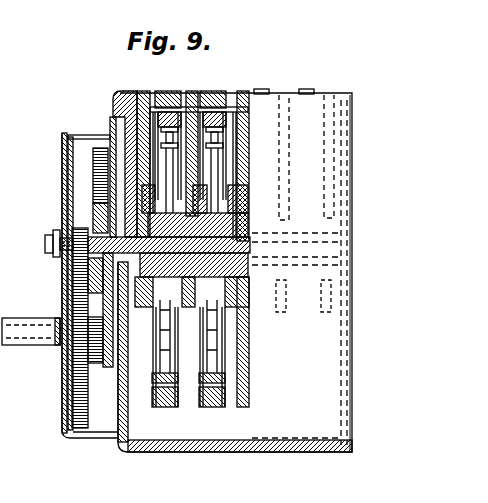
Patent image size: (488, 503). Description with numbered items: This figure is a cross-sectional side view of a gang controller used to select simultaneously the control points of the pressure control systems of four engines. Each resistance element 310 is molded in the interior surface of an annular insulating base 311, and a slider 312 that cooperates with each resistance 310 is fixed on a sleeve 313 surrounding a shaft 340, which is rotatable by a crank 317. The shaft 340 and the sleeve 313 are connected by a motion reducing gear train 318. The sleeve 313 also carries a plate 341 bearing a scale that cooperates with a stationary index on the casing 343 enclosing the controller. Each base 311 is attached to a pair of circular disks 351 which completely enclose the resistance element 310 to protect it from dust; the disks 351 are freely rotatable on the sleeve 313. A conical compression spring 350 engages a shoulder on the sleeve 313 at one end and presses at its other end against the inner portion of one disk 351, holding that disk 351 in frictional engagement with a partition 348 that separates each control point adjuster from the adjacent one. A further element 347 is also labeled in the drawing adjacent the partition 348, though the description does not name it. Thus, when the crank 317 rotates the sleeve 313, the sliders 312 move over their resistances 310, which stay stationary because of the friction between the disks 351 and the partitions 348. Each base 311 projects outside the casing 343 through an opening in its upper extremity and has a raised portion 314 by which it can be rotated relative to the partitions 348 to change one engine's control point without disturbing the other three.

The resistance element 310 is at (212, 340).
The annular insulating base 311 is at (174, 408).
The slider 312 is at (251, 127).
The sleeve 313 is at (291, 242).
The raised portion 314 is at (170, 92).
The crank 317 is at (25, 347).
The motion reducing gear train 318 is at (97, 387).
The shaft 340 is at (308, 250).
The plate 341 is at (108, 125).
The casing 343 is at (213, 448).
The retainer 347 is at (114, 112).
The partition 348 is at (145, 91).
The conical compression spring 350 is at (251, 170).
The circular disk 351 is at (176, 344).